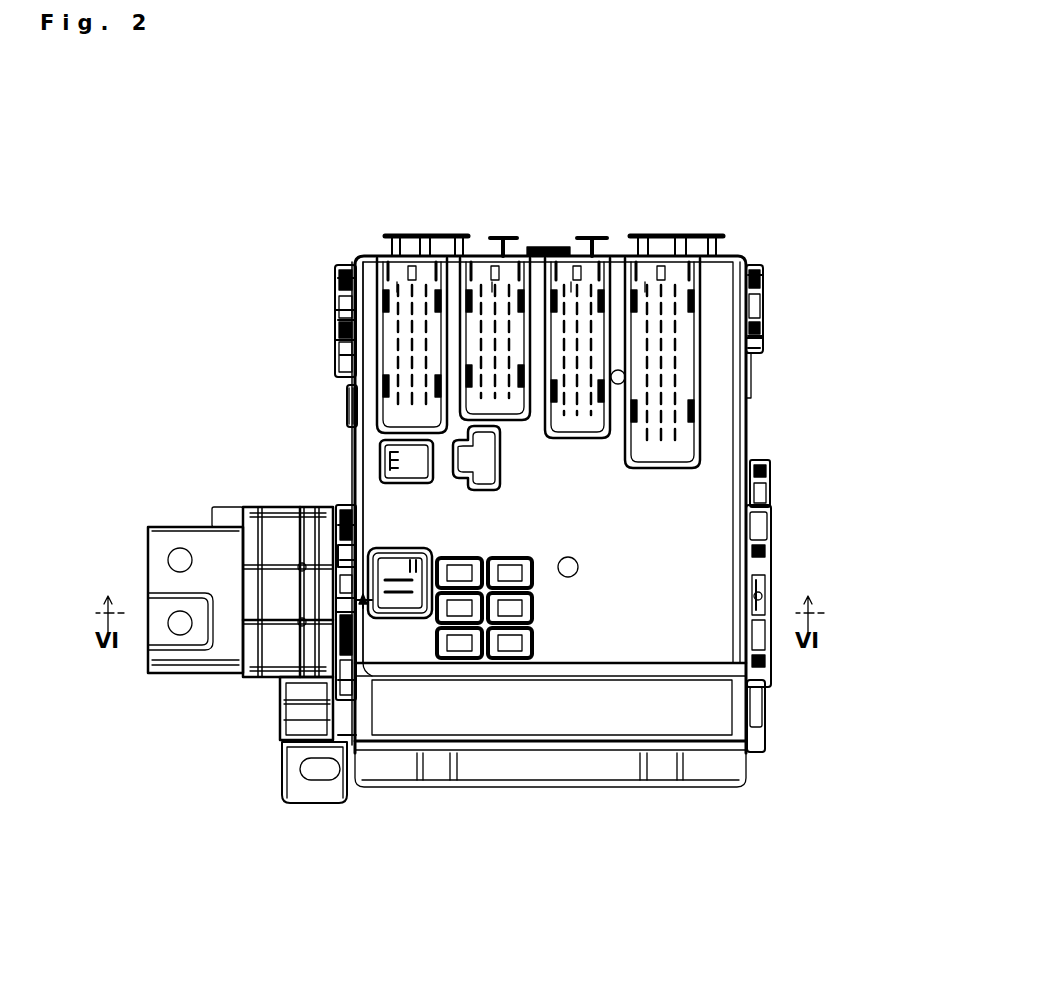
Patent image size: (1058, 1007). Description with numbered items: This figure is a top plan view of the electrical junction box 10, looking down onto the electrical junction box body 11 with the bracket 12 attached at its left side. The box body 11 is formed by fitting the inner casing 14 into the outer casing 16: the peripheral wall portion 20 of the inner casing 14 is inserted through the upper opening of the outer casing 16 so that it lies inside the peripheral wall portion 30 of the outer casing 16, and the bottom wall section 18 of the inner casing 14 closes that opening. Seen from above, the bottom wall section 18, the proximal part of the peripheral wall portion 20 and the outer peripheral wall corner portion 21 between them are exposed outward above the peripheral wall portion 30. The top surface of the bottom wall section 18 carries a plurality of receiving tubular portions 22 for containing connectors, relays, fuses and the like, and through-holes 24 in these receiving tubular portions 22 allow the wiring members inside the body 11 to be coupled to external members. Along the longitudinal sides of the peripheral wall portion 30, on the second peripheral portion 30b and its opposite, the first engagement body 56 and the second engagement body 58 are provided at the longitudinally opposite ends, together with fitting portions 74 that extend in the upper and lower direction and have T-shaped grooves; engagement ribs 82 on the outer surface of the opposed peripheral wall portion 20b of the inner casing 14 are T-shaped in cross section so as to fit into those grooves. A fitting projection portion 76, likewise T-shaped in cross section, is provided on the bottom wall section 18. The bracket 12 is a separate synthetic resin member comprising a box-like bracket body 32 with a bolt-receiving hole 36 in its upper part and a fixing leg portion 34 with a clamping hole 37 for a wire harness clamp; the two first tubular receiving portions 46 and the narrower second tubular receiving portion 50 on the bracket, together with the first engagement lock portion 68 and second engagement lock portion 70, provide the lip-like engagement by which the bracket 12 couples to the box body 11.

The electrical junction box 10 is at (580, 203).
The electrical junction box body 11 is at (659, 221).
The bracket 12 is at (131, 519).
The inner casing 14 is at (760, 688).
The outer casing 16 is at (343, 424).
The bottom wall section 18 is at (622, 600).
The peripheral wall portion 20 is at (350, 372).
The peripheral wall portion 20b is at (752, 405).
The outer peripheral wall corner portion 21 is at (346, 395).
The receiving tubular portions 22 is at (482, 350).
The through-holes 24 is at (405, 280).
The peripheral wall portion 30 is at (350, 407).
The second peripheral portion 30b is at (750, 433).
The bracket body 32 is at (162, 582).
The fixing leg portion 34 is at (292, 790).
The bolt-receiving hole 36 is at (178, 635).
The clamping hole 37 is at (320, 780).
The first tubular receiving portion 46 is at (340, 575).
The second tubular receiving portion 50 is at (258, 625).
The first engagement body 56 is at (771, 600).
The second engagement body 58 is at (331, 306).
The first engagement lock portion 68 is at (338, 555).
The second engagement lock portion 70 is at (305, 640).
The fitting portion 74 is at (390, 300).
The fitting projection portion 76 is at (356, 600).
The engagement ribs 82 is at (348, 278).